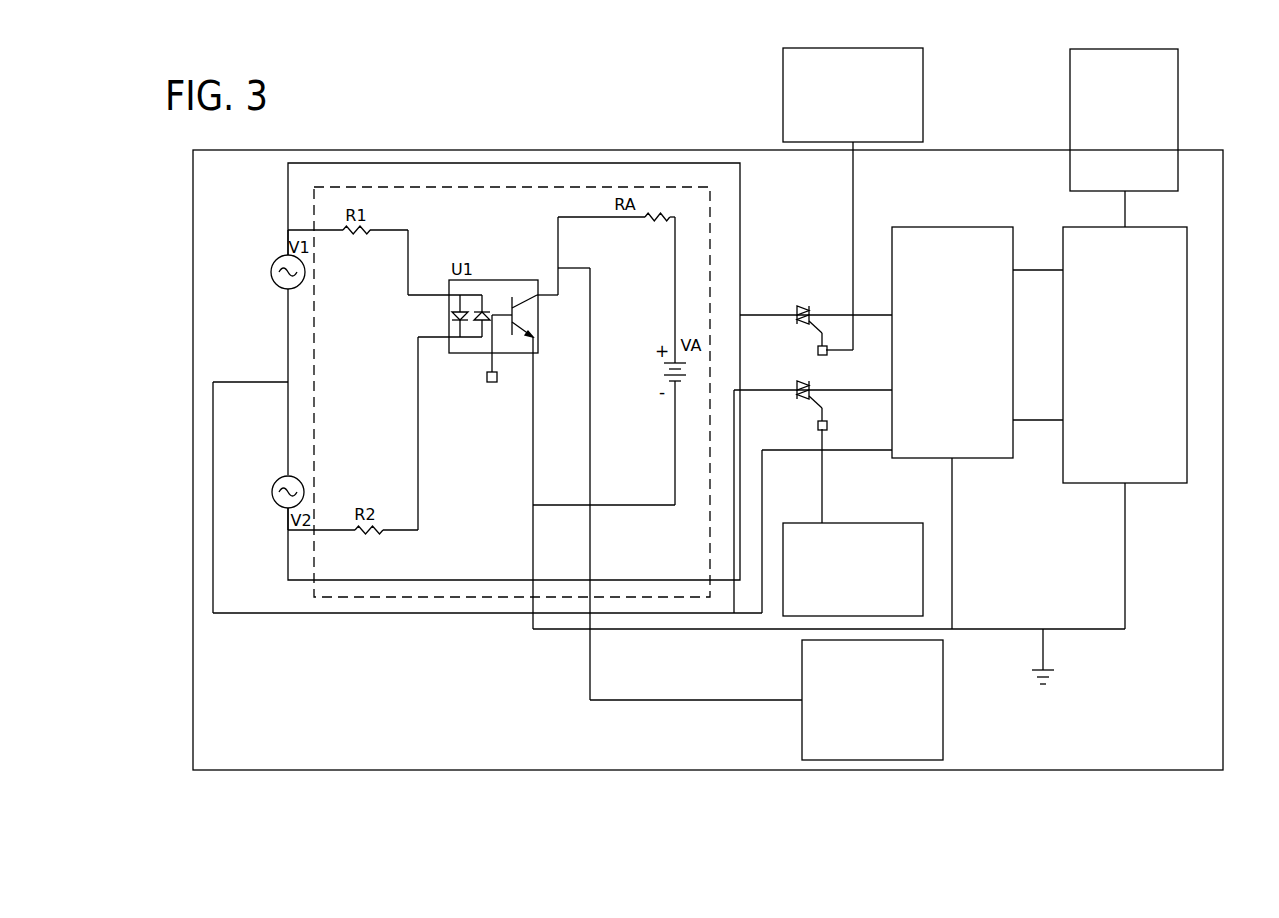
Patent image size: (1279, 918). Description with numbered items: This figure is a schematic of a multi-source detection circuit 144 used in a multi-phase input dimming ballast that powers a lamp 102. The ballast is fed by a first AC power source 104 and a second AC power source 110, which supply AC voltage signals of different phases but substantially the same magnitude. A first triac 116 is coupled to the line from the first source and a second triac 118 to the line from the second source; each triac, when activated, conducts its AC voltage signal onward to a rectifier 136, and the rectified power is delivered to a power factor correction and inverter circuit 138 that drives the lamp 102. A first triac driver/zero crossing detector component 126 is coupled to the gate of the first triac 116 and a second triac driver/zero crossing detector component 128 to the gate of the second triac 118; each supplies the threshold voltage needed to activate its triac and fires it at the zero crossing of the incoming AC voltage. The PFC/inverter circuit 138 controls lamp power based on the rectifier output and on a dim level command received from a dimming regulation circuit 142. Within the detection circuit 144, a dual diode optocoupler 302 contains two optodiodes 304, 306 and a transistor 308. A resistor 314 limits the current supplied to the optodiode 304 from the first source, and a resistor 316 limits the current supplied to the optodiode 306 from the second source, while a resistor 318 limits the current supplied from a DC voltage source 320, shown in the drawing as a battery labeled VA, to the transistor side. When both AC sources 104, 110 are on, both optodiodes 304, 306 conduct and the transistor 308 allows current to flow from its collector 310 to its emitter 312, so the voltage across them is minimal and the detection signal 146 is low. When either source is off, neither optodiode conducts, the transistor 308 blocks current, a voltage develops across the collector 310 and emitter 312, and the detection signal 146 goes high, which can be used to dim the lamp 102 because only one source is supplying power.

The lamp 102 is at (1178, 122).
The first AC power source 104 is at (271, 272).
The second AC power source 110 is at (272, 494).
The first triac 116 is at (803, 307).
The second triac 118 is at (803, 398).
The first triac driver/zero crossing detector component 126 is at (860, 48).
The second triac driver/zero crossing detector component 128 is at (862, 523).
The rectifier 136 is at (952, 227).
The power factor correction and inverter circuit 138 is at (1187, 346).
The dimming regulation circuit 142 is at (848, 760).
The multi-source detection circuit 144 is at (403, 187).
The detection signal 146 is at (665, 700).
The dual diode optocoupler 302 is at (500, 280).
The optodiode 304 is at (456, 318).
The optodiode 306 is at (482, 322).
The transistor 308 is at (535, 318).
The collector 310 is at (535, 292).
The emitter 312 is at (525, 332).
The resistor 314 is at (370, 233).
The resistor 316 is at (366, 532).
The resistor 318 is at (650, 219).
The voltage source VA 320 is at (668, 372).